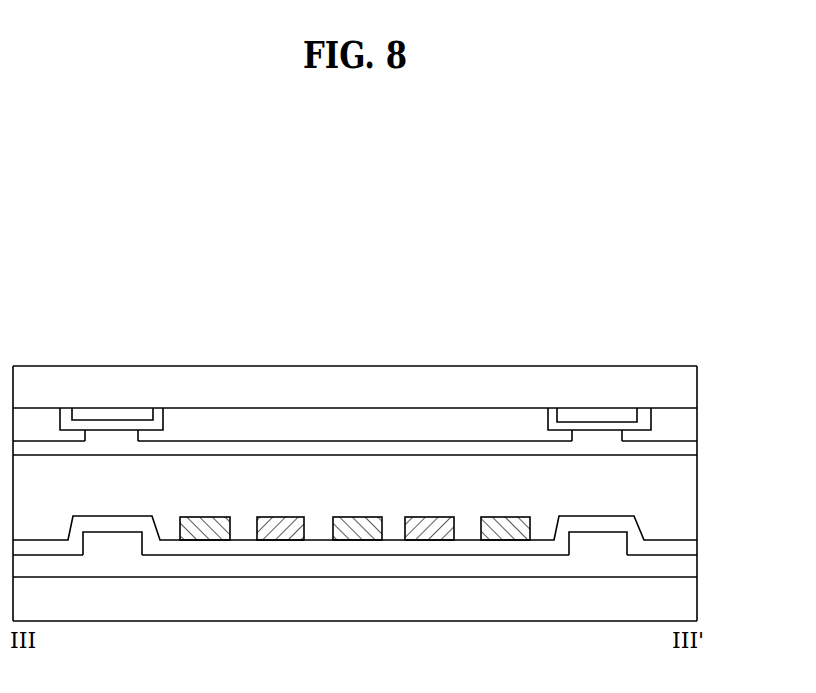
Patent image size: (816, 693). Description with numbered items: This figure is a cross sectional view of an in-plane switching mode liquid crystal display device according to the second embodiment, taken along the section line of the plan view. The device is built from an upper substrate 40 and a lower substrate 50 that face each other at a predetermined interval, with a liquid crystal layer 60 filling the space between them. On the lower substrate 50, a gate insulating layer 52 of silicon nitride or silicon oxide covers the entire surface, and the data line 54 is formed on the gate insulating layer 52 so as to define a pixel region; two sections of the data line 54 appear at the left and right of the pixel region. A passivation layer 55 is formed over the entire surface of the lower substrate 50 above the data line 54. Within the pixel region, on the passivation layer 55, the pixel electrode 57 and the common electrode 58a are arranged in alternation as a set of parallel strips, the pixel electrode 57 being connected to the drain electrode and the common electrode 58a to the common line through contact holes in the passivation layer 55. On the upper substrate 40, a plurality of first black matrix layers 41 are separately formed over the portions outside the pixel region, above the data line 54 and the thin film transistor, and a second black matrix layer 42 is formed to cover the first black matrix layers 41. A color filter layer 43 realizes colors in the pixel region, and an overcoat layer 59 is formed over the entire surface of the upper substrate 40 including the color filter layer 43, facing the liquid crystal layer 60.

The upper substrate 40 is at (697, 389).
The first black matrix layers 41 is at (127, 415).
The second black matrix layer 42 is at (163, 420).
The color filter layer 43 is at (372, 417).
The overcoat layer 59 is at (697, 447).
The liquid crystal layer 60 is at (697, 492).
The common electrode 58a is at (206, 517).
The pixel electrode 57 is at (429, 517).
The passivation layer 55 is at (383, 548).
The data line 54 is at (111, 548).
The gate insulating layer 52 is at (238, 568).
The lower substrate 50 is at (697, 604).